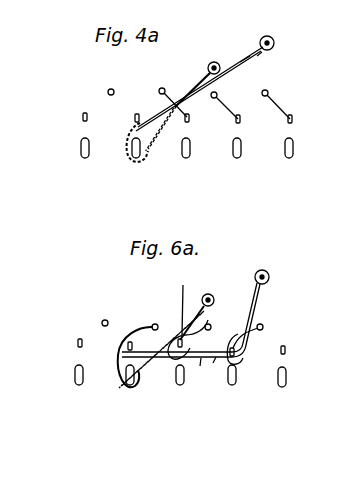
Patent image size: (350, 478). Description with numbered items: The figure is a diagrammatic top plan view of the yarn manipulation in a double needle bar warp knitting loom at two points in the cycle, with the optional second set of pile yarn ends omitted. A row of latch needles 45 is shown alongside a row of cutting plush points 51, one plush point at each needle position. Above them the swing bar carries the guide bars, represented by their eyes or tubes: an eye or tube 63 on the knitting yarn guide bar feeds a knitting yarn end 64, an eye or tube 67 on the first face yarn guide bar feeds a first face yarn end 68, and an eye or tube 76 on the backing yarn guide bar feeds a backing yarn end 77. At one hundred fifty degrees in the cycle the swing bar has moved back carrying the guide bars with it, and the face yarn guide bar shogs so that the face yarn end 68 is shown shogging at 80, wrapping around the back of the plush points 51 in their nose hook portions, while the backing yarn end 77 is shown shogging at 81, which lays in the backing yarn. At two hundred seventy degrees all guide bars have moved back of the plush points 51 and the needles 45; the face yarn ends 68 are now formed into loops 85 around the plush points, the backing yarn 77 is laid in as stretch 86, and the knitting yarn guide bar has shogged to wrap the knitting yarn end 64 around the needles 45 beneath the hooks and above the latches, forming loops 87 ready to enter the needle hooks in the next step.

In FIG. 4A, the latch needle 45 is at (293, 121).
In FIG. 6A, the latch needle 45 is at (77, 342).
In FIG. 4A, the cutting plush point 51 is at (85, 158).
In FIG. 6A, the cutting plush point 51 is at (78, 385).
In FIG. 4A, the eye or tube of the knitting yarn guide bar 63 is at (117, 83).
In FIG. 6A, the eye or tube of the knitting yarn guide bar 63 is at (106, 320).
In FIG. 4A, the knitting yarn end 64 is at (163, 88).
In FIG. 6A, the knitting yarn end 64 is at (130, 333).
In FIG. 4A, the eye or tube of the first face yarn guide bar 67 is at (197, 74).
In FIG. 6A, the eye or tube of the first face yarn guide bar 67 is at (205, 297).
In FIG. 4A, the first face yarn end 68 is at (145, 163).
In FIG. 6A, the first face yarn end 68 is at (138, 390).
In FIG. 4A, the eye or tube of the backing yarn guide bar 76 is at (273, 39).
In FIG. 6A, the eye or tube of the backing yarn guide bar 76 is at (268, 272).
In FIG. 4A, the backing yarn end 77 is at (257, 56).
In FIG. 6A, the backing yarn end 77 is at (200, 366).
In FIG. 4A, the shogging of the face yarn end 80 is at (171, 113).
In FIG. 4A, the shogging of the backing yarn end 81 is at (232, 73).
In FIG. 6A, the face yarn loop 85 is at (156, 386).
In FIG. 6A, the laid-in stretch of backing yarn 86 is at (213, 363).
In FIG. 6A, the knitting yarn loop 87 is at (125, 343).